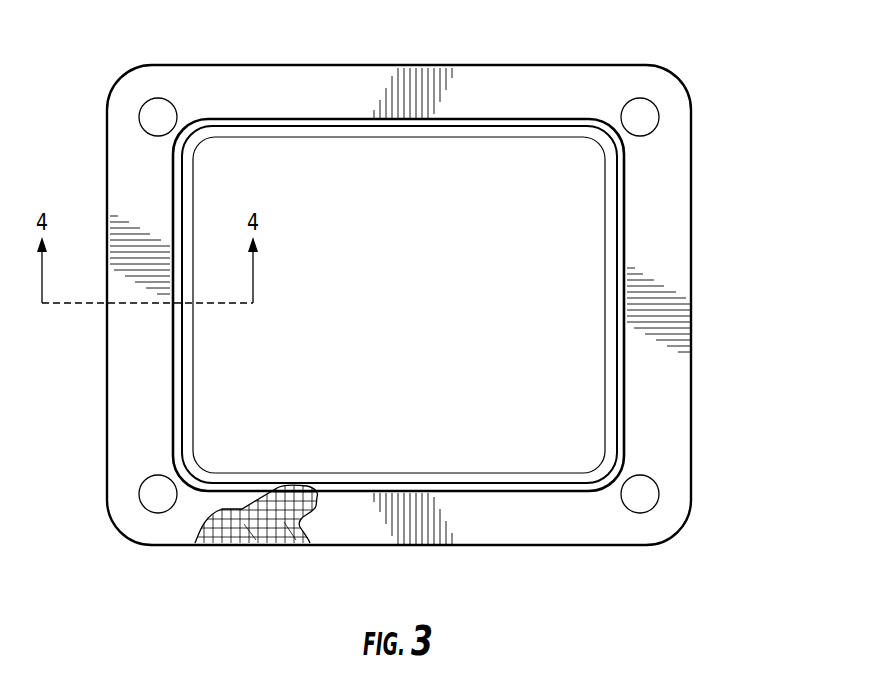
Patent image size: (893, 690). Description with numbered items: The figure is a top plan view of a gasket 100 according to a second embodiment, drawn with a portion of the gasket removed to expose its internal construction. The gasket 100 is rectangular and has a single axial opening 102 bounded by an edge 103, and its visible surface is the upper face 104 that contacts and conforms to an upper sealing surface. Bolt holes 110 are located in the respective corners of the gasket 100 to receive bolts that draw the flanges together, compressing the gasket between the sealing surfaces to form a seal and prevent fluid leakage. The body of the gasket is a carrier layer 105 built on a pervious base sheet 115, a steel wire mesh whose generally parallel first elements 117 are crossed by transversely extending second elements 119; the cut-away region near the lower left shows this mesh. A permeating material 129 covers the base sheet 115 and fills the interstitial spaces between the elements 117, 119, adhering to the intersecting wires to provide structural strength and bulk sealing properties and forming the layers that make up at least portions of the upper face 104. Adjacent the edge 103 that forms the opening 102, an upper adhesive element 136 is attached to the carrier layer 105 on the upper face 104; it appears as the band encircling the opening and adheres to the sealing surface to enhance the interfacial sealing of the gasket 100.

The gasket 100 is at (446, 307).
The axial opening 102 is at (413, 313).
The edge 103 is at (233, 472).
The upper face 104 is at (217, 86).
The carrier layer 105 is at (670, 415).
The bolt holes 110 is at (636, 124).
The pervious base sheet 115 is at (226, 538).
The first elements 117 is at (247, 528).
The second elements 119 is at (277, 532).
The permeating material 129 is at (472, 532).
The upper adhesive element 136 is at (178, 368).